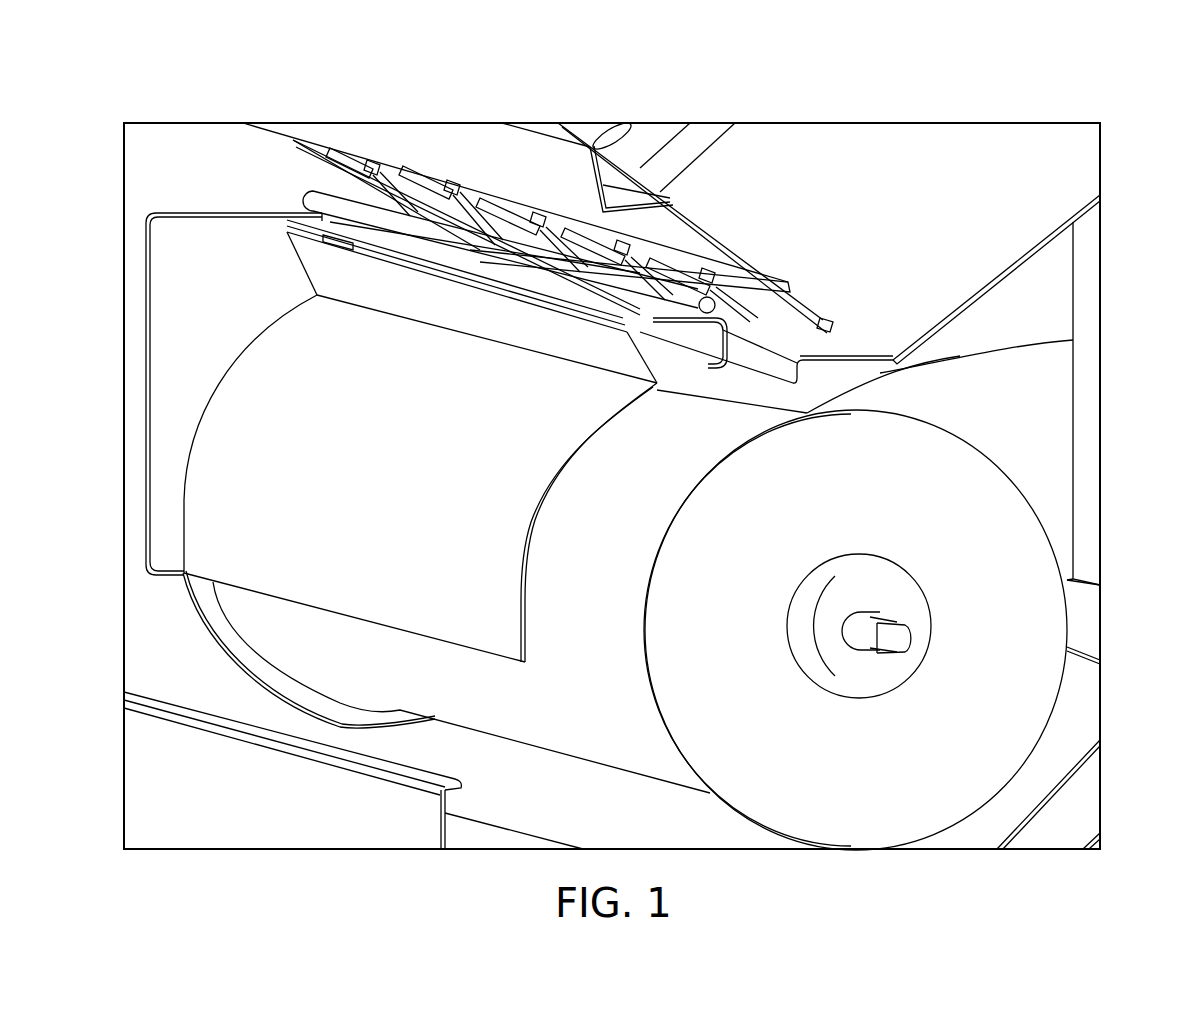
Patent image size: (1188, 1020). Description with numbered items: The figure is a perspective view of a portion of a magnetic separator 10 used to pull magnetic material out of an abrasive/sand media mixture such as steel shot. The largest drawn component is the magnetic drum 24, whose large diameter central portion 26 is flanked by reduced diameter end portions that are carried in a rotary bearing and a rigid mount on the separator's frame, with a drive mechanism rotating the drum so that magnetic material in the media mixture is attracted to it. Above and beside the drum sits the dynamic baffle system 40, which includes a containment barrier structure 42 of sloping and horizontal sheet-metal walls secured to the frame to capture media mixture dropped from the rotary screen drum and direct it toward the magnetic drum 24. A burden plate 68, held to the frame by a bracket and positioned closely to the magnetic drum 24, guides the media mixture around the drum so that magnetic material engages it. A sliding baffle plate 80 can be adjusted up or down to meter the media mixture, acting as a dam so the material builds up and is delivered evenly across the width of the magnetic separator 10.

The magnetic separator 10 is at (192, 197).
The magnetic drum 24 is at (1022, 487).
The large diameter central portion 26 is at (337, 663).
The dynamic baffle system 40 is at (740, 353).
The containment barrier structure 42 is at (960, 317).
The burden plate 68 is at (220, 378).
The sliding baffle plate 80 is at (804, 330).